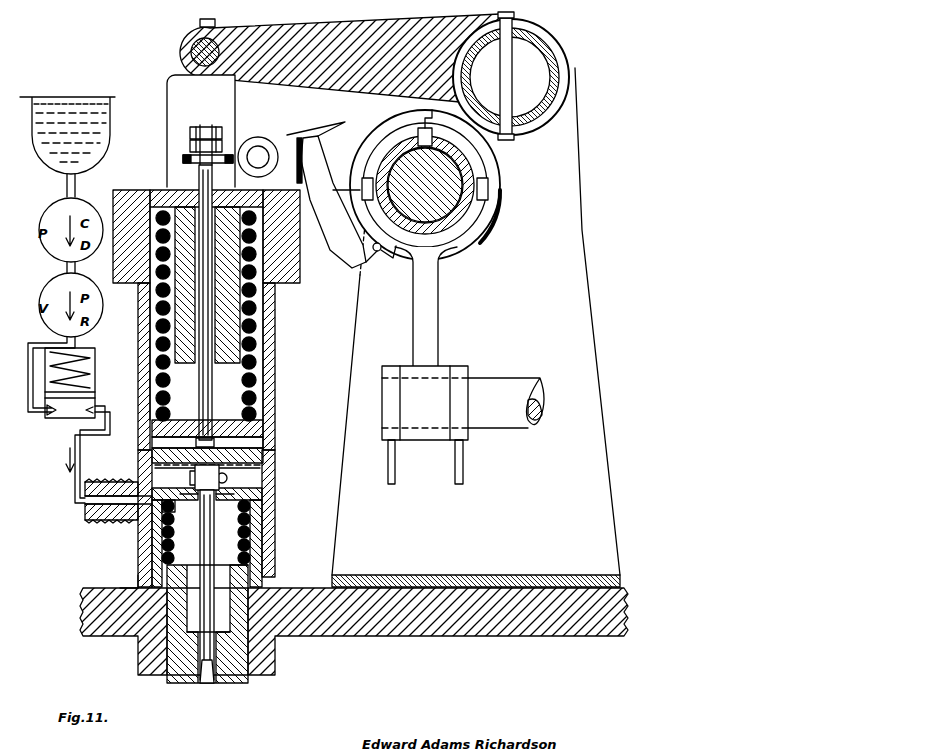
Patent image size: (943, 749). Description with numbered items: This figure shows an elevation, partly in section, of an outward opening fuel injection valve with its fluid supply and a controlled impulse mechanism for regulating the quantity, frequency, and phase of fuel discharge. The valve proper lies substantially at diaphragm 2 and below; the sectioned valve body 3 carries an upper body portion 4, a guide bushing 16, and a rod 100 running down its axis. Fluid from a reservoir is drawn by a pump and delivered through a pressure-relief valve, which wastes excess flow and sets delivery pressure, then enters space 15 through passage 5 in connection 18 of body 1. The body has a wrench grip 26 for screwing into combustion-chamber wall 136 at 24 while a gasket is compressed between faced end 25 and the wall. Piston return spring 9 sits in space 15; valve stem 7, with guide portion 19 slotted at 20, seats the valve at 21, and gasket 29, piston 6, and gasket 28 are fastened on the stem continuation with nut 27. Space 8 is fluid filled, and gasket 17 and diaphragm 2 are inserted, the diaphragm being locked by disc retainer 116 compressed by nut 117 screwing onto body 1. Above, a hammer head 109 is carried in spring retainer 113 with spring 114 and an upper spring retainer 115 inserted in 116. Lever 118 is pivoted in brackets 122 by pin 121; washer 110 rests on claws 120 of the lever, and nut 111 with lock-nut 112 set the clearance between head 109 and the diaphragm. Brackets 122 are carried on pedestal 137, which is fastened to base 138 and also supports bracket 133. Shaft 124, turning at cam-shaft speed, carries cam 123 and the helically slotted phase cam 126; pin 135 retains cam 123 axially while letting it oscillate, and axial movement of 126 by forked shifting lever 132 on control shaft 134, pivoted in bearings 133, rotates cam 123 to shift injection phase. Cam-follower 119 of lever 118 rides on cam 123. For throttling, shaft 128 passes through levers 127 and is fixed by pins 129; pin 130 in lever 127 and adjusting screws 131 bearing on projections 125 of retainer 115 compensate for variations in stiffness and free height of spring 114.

The body 1 is at (276, 335).
The diaphragm 2 is at (264, 452).
The valve body 3 is at (278, 491).
The seat 4 is at (240, 573).
The passage 5 is at (85, 501).
The piston 6 is at (226, 495).
The valve stem 7 is at (211, 536).
The space 8 is at (227, 479).
The piston return spring 9 is at (244, 510).
The space 15 is at (178, 532).
The guide bushing 16 is at (190, 495).
The gasket 17 is at (266, 472).
The connection 18 is at (125, 516).
The guide portion 19 is at (217, 637).
The slot 20 is at (199, 650).
The valve seat 21 is at (221, 668).
The threaded portion 24 is at (249, 615).
The faced end 25 is at (136, 590).
The wrench grip 26 is at (276, 551).
The nut 27 is at (190, 478).
The gasket 28 is at (177, 507).
The gasket 29 is at (183, 522).
The piston rod 100 is at (250, 389).
The hammer head 109 is at (216, 443).
The washer 110 is at (183, 161).
The nut 111 is at (190, 147).
The lock-nut 112 is at (190, 133).
The spring retainer 113 is at (256, 432).
The spring 114 is at (264, 372).
The spring retainer 115 is at (206, 316).
The disc retainer 116 is at (276, 303).
The nut 117 is at (296, 274).
The lever 118 is at (331, 202).
The cam-follower 119 is at (378, 252).
The claws 120 is at (202, 166).
The pin 121 is at (258, 150).
The brackets 122 is at (329, 127).
The cam 123 is at (498, 192).
The shaft 124 is at (425, 185).
The projections 125 is at (172, 110).
The phase cam 126 is at (478, 161).
The lever 127 is at (360, 67).
The shaft 128 is at (566, 72).
The pins 129 is at (513, 70).
The pin 130 is at (192, 51).
The adjusting screws 131 is at (216, 22).
The shifting lever 132 is at (439, 302).
The bracket 133 is at (456, 443).
The control shaft 134 is at (517, 382).
The pin 135 is at (417, 121).
The combustion-chamber wall 136 is at (354, 631).
The pedestal 137 is at (587, 254).
The base 138 is at (616, 580).